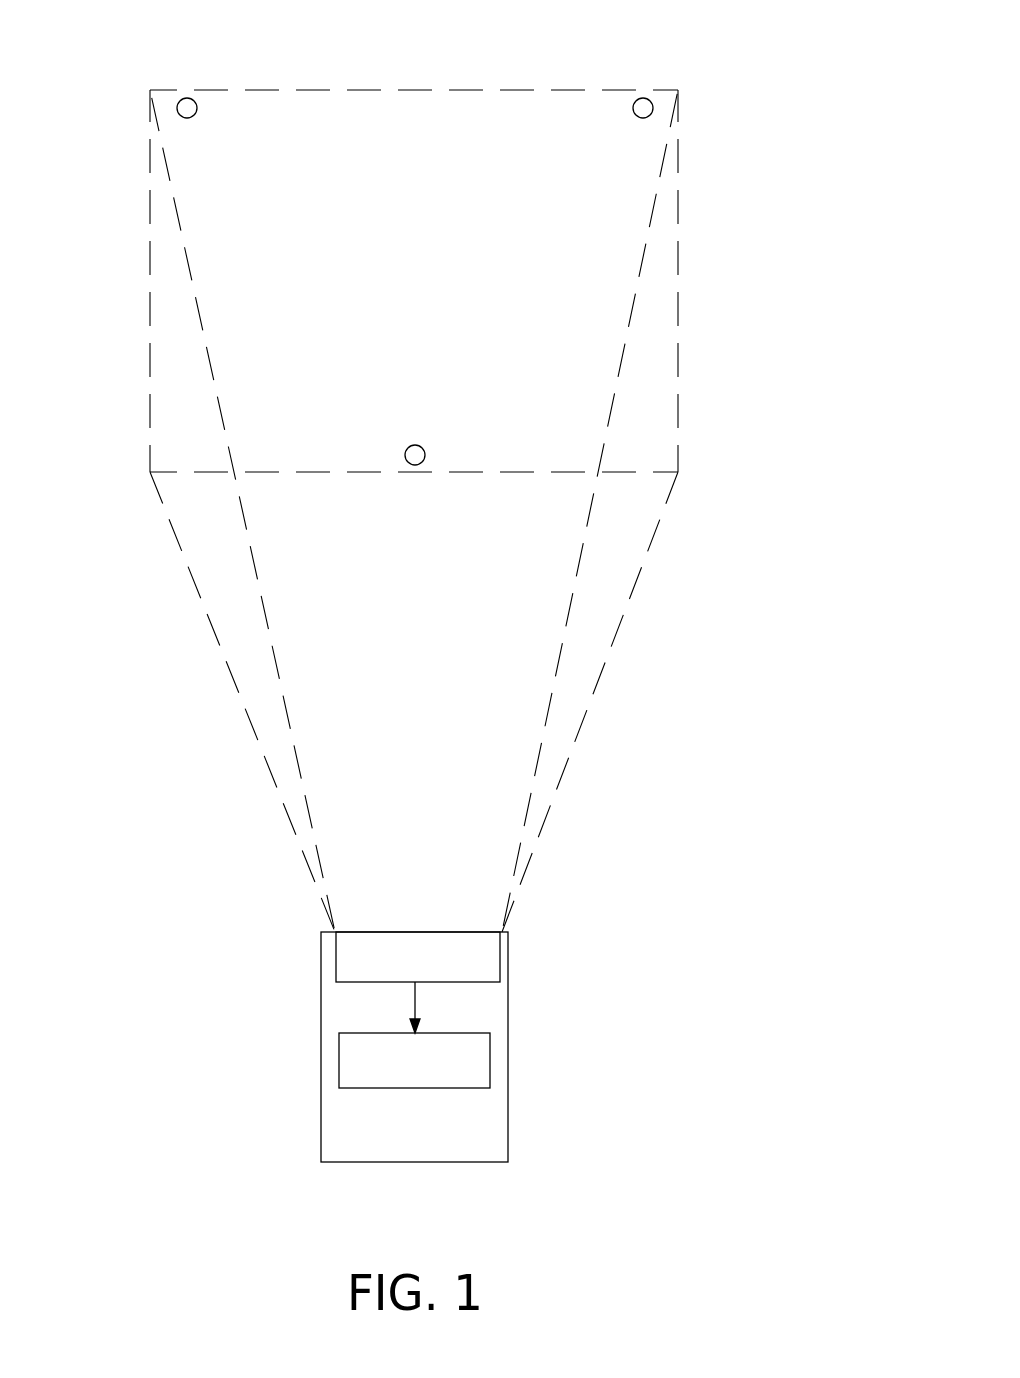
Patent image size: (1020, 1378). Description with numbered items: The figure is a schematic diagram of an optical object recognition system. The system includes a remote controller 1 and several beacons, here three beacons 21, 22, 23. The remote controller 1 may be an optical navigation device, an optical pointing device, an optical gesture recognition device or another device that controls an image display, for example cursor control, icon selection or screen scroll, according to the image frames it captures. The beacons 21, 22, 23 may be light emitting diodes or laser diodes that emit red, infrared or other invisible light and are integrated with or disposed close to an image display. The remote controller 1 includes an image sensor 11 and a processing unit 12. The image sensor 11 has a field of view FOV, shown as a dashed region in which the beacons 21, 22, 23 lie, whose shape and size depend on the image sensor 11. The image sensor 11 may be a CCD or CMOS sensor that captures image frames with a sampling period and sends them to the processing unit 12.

The remote controller 1 is at (435, 1047).
The image sensor 11 is at (500, 958).
The processing unit 12 is at (490, 1067).
The beacon 21 is at (183, 106).
The beacon 22 is at (647, 105).
The beacon 23 is at (413, 464).
The field of view FOV is at (573, 90).